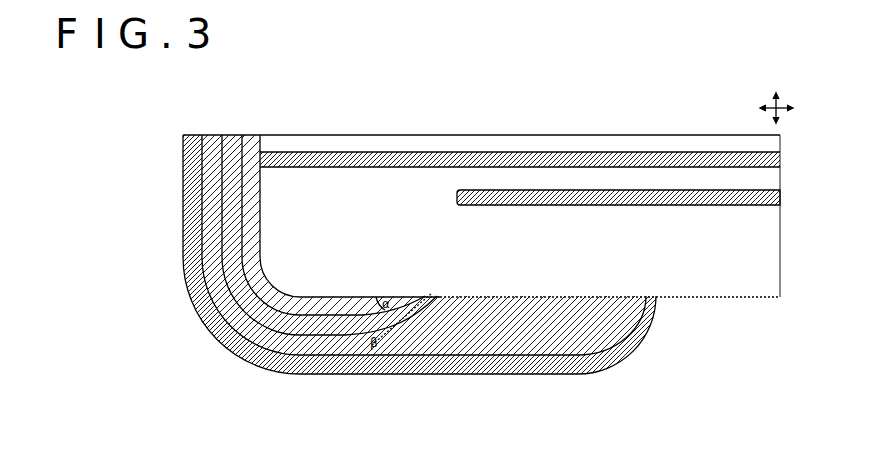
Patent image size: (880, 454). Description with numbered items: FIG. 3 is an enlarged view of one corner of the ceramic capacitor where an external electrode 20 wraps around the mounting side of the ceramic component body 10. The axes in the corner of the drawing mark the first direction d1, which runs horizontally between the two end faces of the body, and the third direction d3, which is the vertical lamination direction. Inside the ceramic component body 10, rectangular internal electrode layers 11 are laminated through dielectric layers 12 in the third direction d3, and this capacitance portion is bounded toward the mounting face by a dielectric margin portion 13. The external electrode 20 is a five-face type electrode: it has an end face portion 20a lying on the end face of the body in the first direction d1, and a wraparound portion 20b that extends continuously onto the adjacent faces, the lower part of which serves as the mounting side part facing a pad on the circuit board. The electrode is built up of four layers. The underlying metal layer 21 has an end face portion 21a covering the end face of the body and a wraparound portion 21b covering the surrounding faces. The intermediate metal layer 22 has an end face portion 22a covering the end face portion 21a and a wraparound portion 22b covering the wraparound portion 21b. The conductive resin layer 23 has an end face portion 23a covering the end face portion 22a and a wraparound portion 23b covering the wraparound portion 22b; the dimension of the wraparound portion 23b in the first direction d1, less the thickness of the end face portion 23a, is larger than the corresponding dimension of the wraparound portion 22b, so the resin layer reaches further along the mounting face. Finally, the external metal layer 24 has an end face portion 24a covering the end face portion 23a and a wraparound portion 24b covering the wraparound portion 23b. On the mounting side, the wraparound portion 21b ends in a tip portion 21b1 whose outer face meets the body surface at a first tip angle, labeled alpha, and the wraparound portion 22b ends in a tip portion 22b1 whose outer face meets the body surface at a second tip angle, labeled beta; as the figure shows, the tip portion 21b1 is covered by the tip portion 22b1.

The ceramic component body 10 is at (670, 297).
The internal electrode layers 11 is at (702, 197).
The dielectric layers 12 is at (728, 180).
The dielectric margin portion 13 is at (760, 270).
The external electrode 20 is at (364, 254).
The end face portion 20a is at (364, 254).
The wraparound portion 20b is at (372, 376).
The underlying metal layer 21 is at (256, 225).
The end face portion 21a is at (250, 175).
The wraparound portion 21b is at (323, 305).
The tip portion 21b1 is at (408, 295).
The intermediate metal layer 22 is at (254, 235).
The end face portion 22a is at (232, 197).
The wraparound portion 22b is at (327, 325).
The tip portion 22b1 is at (425, 300).
The conductive resin layer 23 is at (359, 245).
The end face portion 23a is at (212, 222).
The wraparound portion 23b is at (437, 335).
The external metal layer 24 is at (364, 254).
The end face portion 24a is at (183, 245).
The wraparound portion 24b is at (475, 362).
The first direction d1 is at (785, 109).
The third direction d3 is at (776, 100).